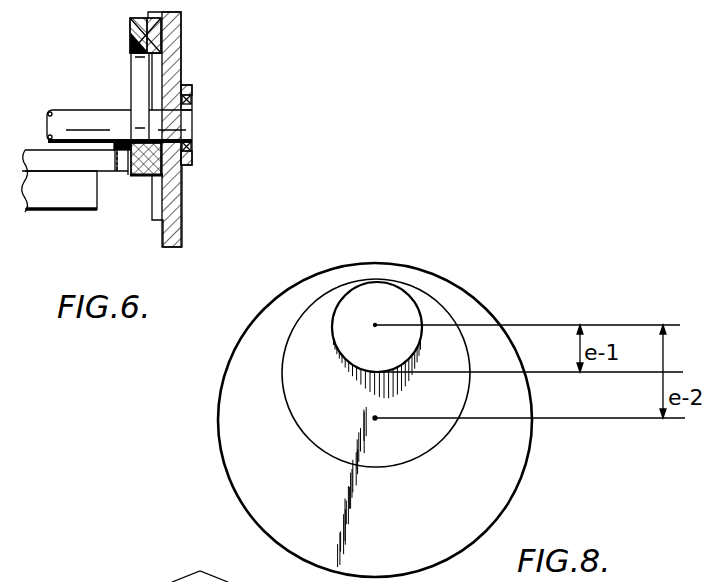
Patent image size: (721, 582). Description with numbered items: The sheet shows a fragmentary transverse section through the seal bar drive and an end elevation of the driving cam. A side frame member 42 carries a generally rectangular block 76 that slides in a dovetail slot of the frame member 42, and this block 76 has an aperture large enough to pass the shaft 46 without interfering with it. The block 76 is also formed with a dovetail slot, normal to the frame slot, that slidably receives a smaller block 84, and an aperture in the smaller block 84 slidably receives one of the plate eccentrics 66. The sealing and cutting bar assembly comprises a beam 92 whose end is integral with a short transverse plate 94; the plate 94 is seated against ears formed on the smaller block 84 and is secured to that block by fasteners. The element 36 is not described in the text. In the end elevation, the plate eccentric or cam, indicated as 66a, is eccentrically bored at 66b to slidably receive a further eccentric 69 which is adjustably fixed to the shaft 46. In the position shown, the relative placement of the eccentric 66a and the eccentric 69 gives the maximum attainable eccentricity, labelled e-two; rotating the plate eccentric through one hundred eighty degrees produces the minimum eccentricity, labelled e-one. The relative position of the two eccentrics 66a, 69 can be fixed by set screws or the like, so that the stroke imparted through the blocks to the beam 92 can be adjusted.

In FIG. 6, the side frame member 42 is at (172, 55).
In FIG. 6, the generally rectangular block 76 is at (130, 24).
In FIG. 6, the smaller block 84 is at (130, 45).
In FIG. 6, the plate eccentric 66 is at (137, 80).
In FIG. 6, the shaft 46 is at (63, 115).
In FIG. 8, the shaft 46 is at (398, 302).
In FIG. 6, the beam 92 is at (33, 155).
In FIG. 6, the short transverse plate 94 is at (126, 172).
In FIG. 6, the support arm 36 is at (66, 215).
In FIG. 8, the plate eccentric 66a is at (503, 477).
In FIG. 8, the eccentric 69 is at (296, 410).
In FIG. 8, the eccentric bore 66b is at (318, 444).